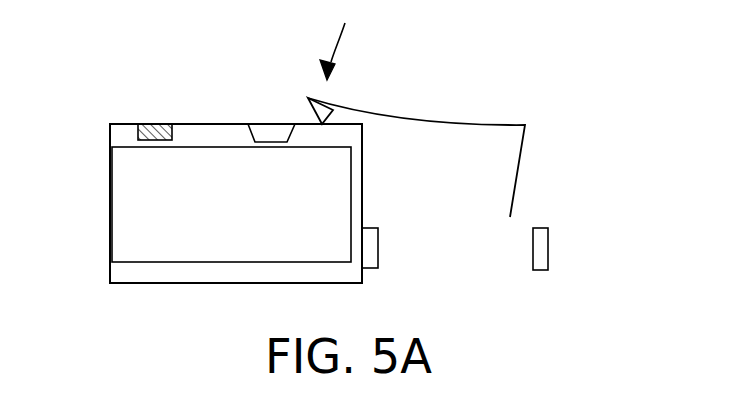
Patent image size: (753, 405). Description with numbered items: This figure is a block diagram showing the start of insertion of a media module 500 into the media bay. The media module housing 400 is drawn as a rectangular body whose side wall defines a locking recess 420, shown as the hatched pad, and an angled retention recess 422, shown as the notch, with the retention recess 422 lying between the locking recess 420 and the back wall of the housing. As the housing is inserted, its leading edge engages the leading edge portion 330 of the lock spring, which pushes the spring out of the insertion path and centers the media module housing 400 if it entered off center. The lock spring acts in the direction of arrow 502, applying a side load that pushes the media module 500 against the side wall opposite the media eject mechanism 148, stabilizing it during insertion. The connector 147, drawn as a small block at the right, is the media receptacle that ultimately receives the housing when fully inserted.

The media module housing 400 is at (127, 152).
The media module 500 is at (252, 233).
The locking recess 420 is at (150, 124).
The retention recess 422 is at (265, 124).
The leading edge portion 330 is at (308, 105).
The media eject mechanism 148 is at (515, 87).
The arrow 502 is at (337, 42).
The connector 147 is at (548, 243).